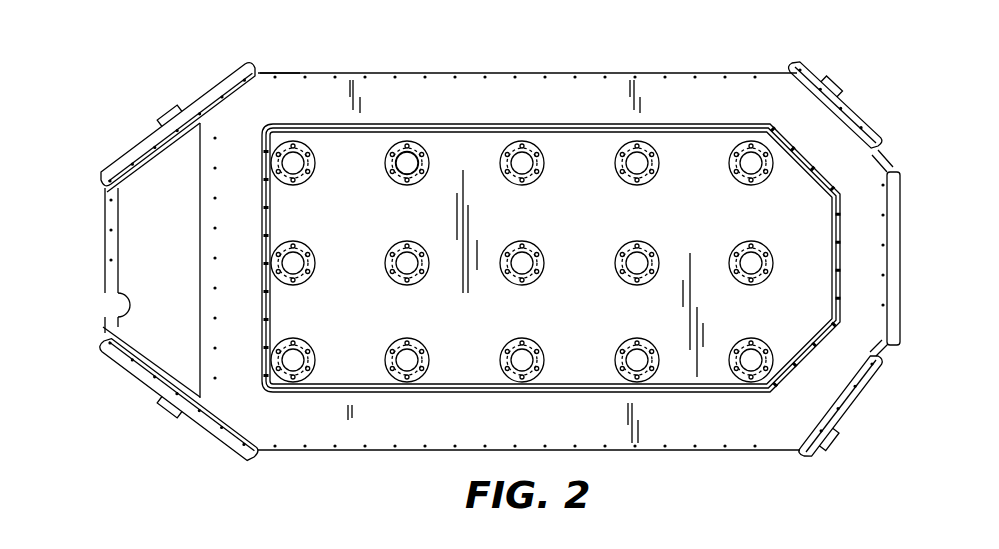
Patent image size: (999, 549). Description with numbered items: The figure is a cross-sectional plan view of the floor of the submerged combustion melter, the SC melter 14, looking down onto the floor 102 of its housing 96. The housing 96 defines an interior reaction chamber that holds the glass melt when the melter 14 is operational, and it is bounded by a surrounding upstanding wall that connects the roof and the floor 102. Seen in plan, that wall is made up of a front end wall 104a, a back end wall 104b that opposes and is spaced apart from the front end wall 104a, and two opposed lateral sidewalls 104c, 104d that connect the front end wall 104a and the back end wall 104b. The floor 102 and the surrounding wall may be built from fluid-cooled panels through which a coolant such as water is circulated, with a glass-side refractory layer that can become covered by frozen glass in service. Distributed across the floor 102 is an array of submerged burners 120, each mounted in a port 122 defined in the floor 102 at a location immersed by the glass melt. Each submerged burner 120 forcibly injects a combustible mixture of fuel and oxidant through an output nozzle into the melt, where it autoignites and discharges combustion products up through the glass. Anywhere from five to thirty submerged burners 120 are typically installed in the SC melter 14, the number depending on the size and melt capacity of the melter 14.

The SC melter 14 is at (158, 100).
The housing 96 is at (302, 70).
The floor 102 is at (596, 223).
The front end wall 104a is at (110, 243).
The back end wall 104b is at (872, 267).
The lateral sidewall 104c is at (527, 92).
The lateral sidewall 104d is at (605, 430).
The submerged burner 120 is at (404, 166).
The port 122 is at (415, 182).